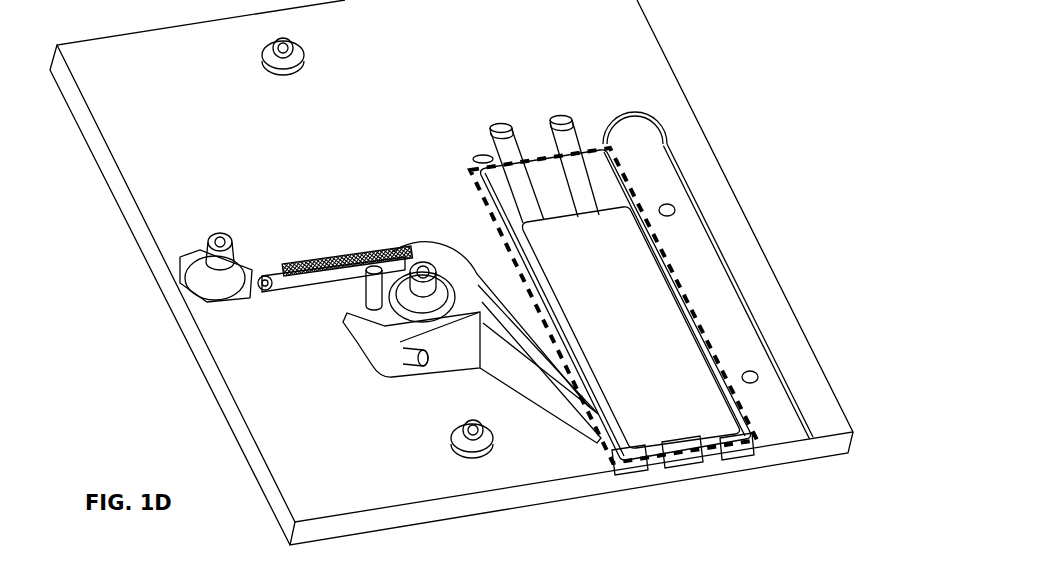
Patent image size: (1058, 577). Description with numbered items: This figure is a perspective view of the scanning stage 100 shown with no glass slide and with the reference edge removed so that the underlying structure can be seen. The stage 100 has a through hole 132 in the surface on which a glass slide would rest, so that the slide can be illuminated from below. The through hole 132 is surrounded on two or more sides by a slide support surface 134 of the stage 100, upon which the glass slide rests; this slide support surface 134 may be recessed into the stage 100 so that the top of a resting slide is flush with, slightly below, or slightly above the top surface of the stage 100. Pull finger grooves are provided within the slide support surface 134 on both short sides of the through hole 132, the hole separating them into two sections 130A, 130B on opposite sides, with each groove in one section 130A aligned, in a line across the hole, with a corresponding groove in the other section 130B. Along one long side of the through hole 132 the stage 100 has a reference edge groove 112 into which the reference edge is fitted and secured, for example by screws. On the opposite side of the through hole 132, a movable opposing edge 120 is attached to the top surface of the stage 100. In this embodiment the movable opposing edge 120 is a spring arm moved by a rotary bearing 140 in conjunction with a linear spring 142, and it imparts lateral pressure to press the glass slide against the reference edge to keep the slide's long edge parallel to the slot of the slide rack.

The scanning stage 100 is at (782, 236).
The reference edge groove 112 is at (690, 237).
The movable opposing edge 120 is at (532, 357).
The pull finger groove section 130A is at (560, 117).
The pull finger groove section 130B is at (657, 468).
The through hole 132 is at (677, 407).
The slide support surface 134 is at (630, 170).
The rotary bearing 140 is at (385, 310).
The linear spring 142 is at (333, 257).